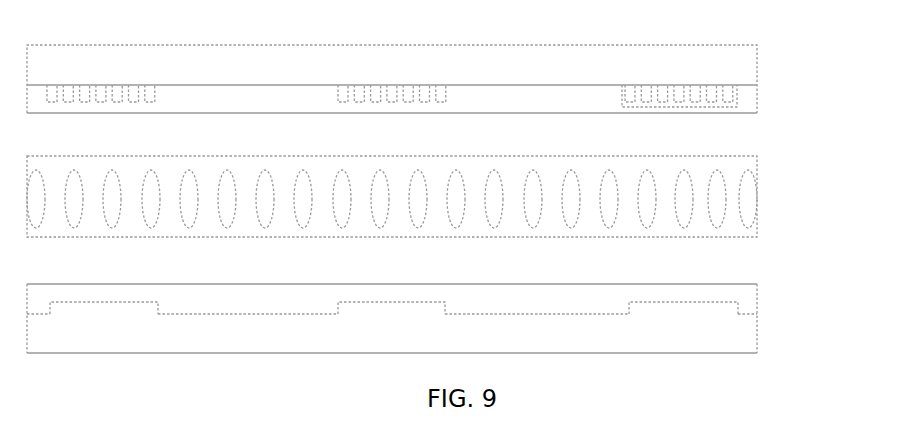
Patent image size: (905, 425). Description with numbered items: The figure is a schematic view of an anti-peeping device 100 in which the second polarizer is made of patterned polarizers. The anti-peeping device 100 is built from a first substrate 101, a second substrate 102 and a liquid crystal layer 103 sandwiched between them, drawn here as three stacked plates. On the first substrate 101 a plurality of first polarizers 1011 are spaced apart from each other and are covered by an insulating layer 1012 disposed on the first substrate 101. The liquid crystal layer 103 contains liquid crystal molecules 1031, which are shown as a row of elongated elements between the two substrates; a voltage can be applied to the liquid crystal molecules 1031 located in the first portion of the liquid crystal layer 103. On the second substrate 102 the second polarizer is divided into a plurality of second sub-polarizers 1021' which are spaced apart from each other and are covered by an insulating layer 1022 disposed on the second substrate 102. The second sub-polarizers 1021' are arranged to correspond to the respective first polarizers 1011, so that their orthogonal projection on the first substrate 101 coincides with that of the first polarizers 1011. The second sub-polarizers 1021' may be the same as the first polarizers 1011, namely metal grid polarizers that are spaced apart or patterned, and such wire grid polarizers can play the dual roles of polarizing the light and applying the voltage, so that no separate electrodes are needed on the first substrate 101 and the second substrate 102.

The anti-peeping device 100 is at (742, 30).
The first substrate 101 is at (418, 60).
The first polarizers 1011 is at (735, 100).
The insulating layer 1012 is at (747, 106).
The liquid crystal layer 103 is at (413, 181).
The liquid crystal molecules 1031 is at (70, 180).
The second substrate 102 is at (422, 301).
The second sub-polarizers 1021' is at (433, 282).
The insulating layer 1022 is at (747, 306).